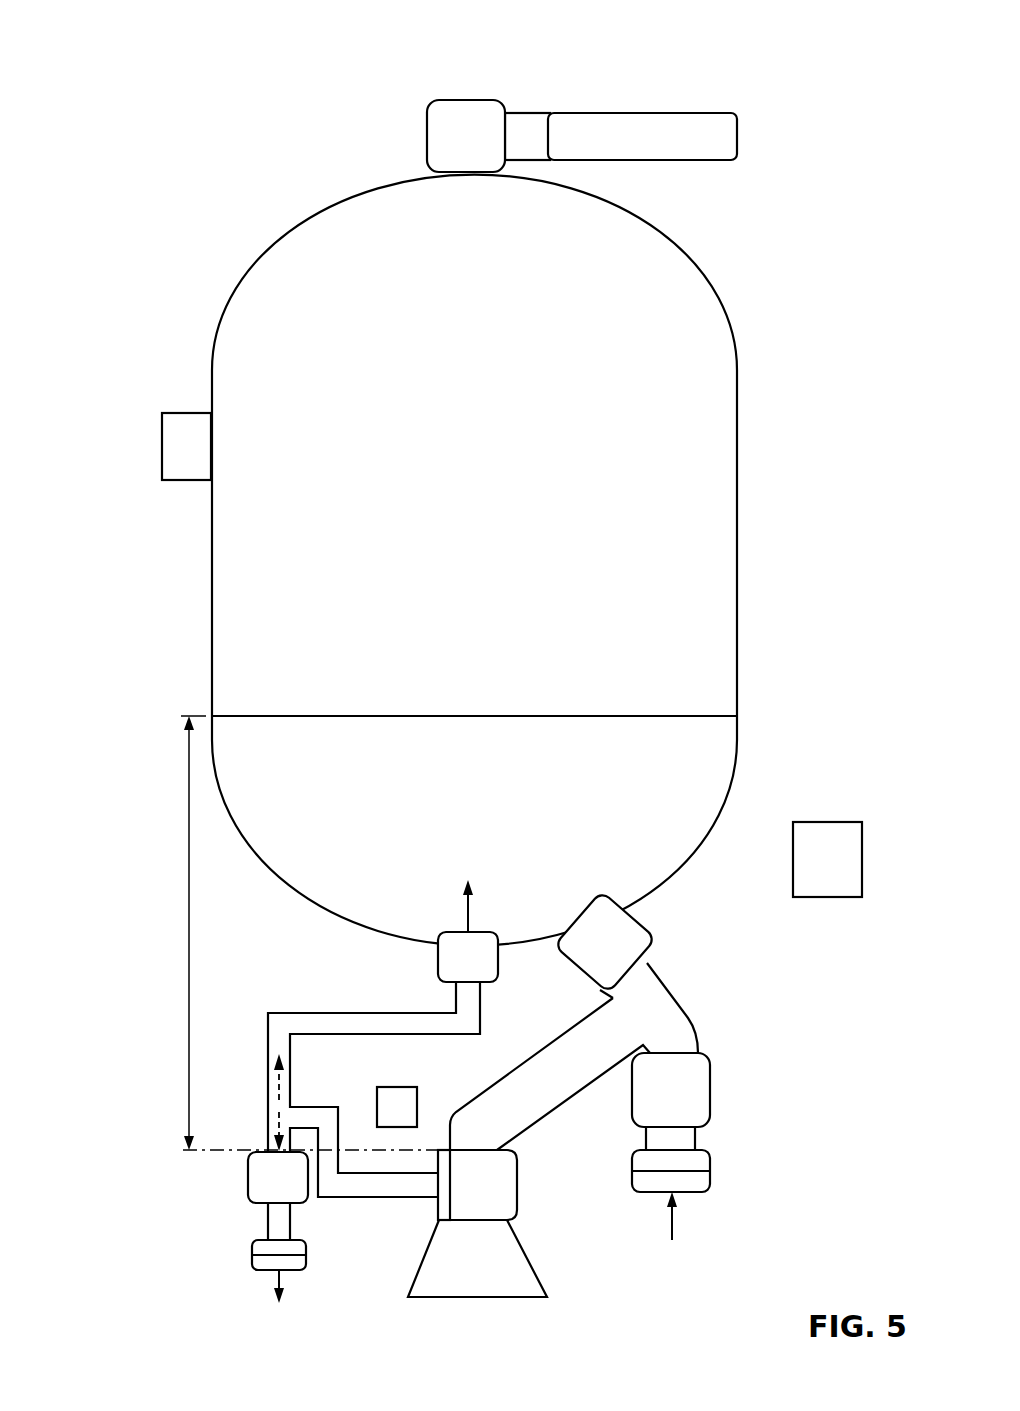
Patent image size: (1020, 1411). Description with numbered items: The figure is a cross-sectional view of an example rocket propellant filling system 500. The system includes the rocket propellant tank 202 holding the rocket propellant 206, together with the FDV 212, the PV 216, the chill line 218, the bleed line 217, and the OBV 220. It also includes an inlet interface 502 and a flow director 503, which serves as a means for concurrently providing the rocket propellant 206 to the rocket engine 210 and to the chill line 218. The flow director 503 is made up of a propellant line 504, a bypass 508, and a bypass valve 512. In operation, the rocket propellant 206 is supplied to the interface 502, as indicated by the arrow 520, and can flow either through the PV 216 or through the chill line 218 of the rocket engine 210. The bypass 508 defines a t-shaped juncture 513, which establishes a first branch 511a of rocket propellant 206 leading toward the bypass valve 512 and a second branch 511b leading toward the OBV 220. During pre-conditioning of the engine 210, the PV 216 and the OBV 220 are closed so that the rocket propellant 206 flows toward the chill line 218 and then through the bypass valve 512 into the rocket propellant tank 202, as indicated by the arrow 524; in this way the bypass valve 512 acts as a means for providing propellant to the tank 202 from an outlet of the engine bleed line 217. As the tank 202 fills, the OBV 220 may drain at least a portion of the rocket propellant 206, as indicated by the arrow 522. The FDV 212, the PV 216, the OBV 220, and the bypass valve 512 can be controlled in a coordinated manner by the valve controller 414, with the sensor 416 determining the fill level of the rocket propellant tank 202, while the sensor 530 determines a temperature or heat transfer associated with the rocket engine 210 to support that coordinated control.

The rocket propellant filling system 500 is at (120, 40).
The rocket propellant tank 202 is at (782, 337).
The rocket propellant 206 is at (497, 822).
The rocket engine 210 is at (536, 1317).
The FDV 212 is at (710, 1085).
The PV 216 is at (656, 931).
The bleed line 217 is at (362, 1187).
The chill line 218 is at (452, 1183).
The OBV 220 is at (248, 1172).
The valve controller 414 is at (830, 820).
The sensor 416 is at (162, 447).
The interface 502 is at (710, 1165).
The flow director 503 is at (474, 1074).
The propellant line 504 is at (637, 1010).
The bypass 508 is at (318, 1118).
The first branch 511a is at (268, 1083).
The second branch 511b is at (268, 1122).
The bypass valve 512 is at (438, 950).
The t-shaped juncture 513 is at (282, 1109).
The arrow 520 is at (675, 1222).
The arrow 522 is at (277, 1292).
The arrow 524 is at (464, 925).
The sensor 530 is at (397, 1127).